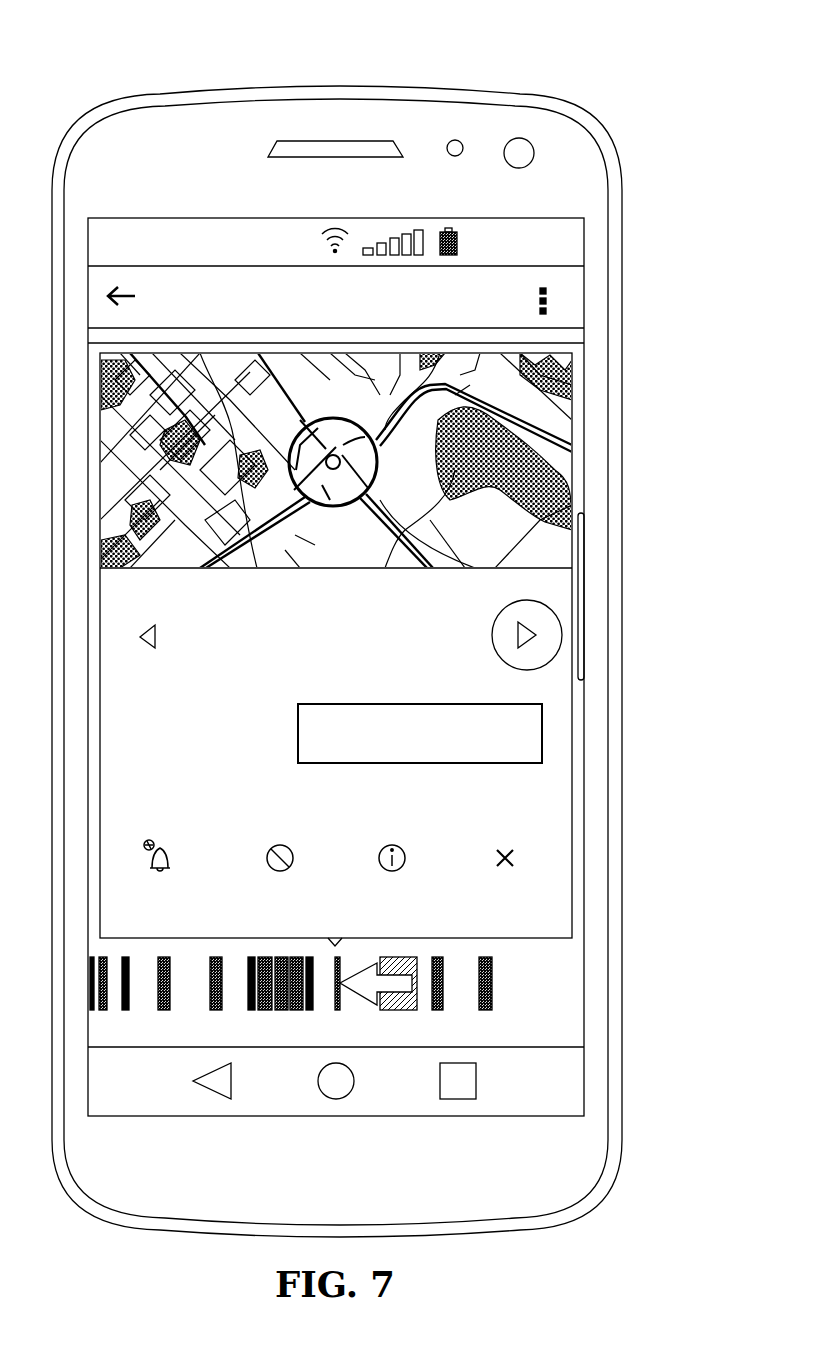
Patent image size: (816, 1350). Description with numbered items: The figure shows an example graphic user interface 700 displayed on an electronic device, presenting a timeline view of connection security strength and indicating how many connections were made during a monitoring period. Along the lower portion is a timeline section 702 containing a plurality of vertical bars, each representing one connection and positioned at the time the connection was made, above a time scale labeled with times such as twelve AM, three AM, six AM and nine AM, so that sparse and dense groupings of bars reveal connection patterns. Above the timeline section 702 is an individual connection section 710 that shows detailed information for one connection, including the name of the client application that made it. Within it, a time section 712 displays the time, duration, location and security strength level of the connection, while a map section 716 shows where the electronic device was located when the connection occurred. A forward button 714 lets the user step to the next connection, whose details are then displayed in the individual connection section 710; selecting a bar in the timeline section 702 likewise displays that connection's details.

The graphic user interface 700 is at (372, 618).
The timeline section 702 is at (560, 983).
The individual connection section 710 is at (557, 855).
The time section 712 is at (437, 703).
The forward button 714 is at (492, 635).
The map section 716 is at (558, 416).